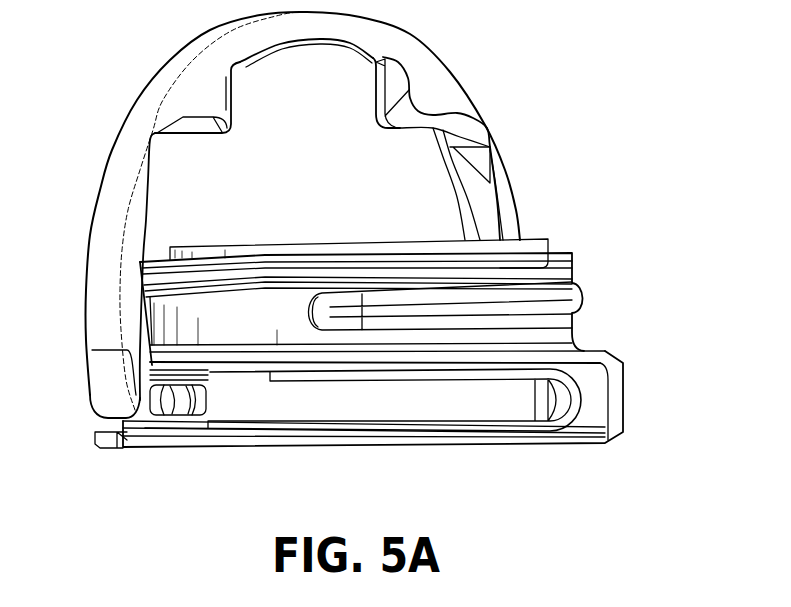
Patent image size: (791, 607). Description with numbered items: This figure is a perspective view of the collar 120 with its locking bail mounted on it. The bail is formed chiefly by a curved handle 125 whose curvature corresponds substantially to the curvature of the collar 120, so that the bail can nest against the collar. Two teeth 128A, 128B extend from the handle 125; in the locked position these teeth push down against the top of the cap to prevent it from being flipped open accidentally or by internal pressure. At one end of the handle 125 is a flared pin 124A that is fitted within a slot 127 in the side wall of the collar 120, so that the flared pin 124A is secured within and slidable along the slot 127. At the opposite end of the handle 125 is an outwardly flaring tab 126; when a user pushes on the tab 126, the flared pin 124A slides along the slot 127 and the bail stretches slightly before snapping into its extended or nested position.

The collar 120 is at (598, 332).
The flared pin 124A is at (197, 405).
The handle 125 is at (138, 110).
The tab 126 is at (110, 392).
The slot 127 is at (470, 393).
The tooth 128A is at (433, 88).
The tooth 128B is at (217, 83).